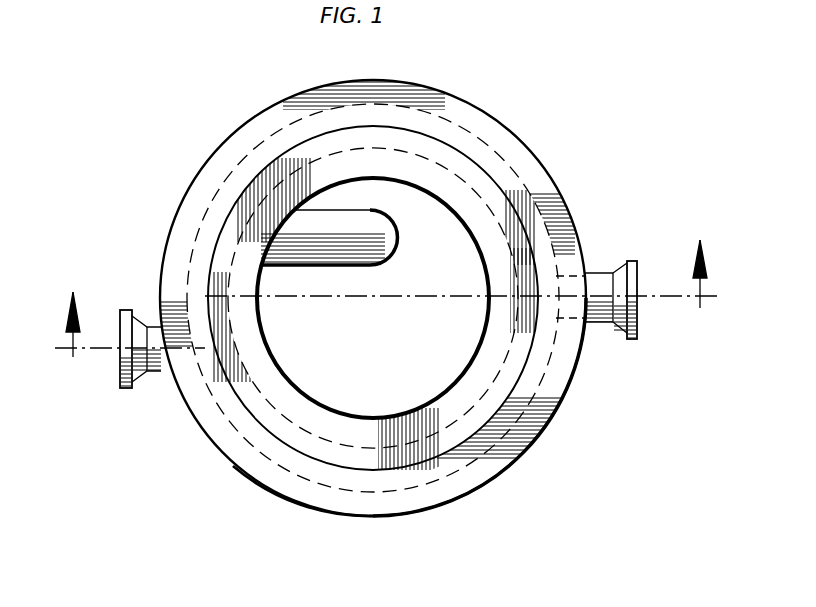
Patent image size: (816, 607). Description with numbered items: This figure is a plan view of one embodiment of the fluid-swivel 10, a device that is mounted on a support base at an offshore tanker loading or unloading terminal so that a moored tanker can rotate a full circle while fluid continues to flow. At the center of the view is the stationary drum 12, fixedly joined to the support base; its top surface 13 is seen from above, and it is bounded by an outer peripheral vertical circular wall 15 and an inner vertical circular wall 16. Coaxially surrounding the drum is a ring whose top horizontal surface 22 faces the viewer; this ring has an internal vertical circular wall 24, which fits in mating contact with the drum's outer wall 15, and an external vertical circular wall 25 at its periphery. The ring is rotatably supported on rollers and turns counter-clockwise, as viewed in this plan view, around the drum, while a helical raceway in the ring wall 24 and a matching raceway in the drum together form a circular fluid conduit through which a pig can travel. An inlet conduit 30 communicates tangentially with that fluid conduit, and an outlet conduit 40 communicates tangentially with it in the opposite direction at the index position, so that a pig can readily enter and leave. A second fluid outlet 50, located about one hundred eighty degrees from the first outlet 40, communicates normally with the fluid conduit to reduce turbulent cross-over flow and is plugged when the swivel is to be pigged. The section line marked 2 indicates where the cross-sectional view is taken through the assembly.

The fluid-swivel 10 is at (175, 175).
The stationary drum 12 is at (478, 191).
The top surface 13 is at (297, 407).
The outer peripheral vertical circular wall 15 is at (516, 373).
The inner vertical circular wall 16 is at (445, 208).
The top horizontal surface 22 is at (483, 467).
The internal vertical circular wall 24 is at (507, 407).
The external vertical circular wall 25 is at (427, 515).
The inlet conduit 30 is at (317, 266).
The outlet conduit 40 is at (157, 375).
The second fluid outlet 50 is at (593, 278).
The section line 2- 2 is at (384, 286).